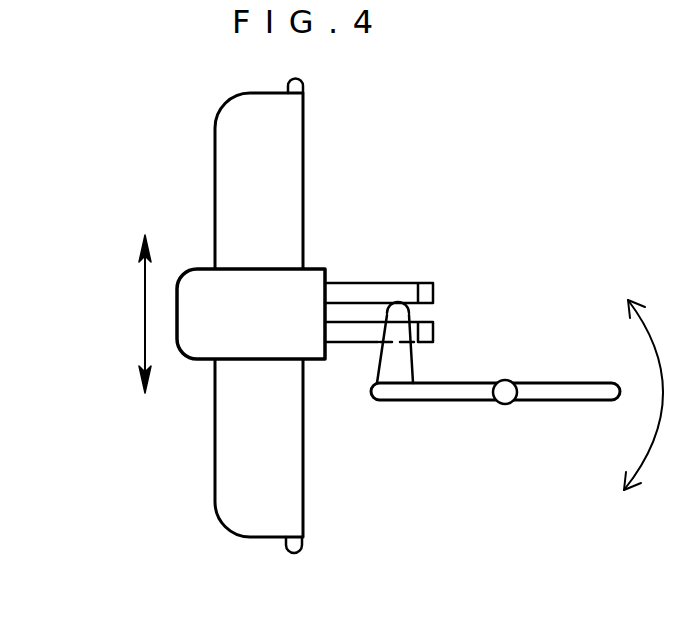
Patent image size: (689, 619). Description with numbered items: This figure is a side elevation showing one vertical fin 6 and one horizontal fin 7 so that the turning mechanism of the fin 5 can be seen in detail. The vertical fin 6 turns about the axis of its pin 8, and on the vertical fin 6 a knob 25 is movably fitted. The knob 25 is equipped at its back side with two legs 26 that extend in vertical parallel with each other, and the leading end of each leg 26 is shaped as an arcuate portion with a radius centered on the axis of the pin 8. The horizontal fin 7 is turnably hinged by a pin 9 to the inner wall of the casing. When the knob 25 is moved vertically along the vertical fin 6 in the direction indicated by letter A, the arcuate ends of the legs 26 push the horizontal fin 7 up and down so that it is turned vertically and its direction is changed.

The fin 5 is at (388, 157).
The vertical fin 6 is at (213, 152).
The horizontal fin 7 is at (450, 399).
The pin 8 is at (302, 85).
The pin 9 is at (505, 395).
The knob 25 is at (183, 357).
The leg 26 is at (352, 292).
The direction of vertical movement A is at (145, 312).